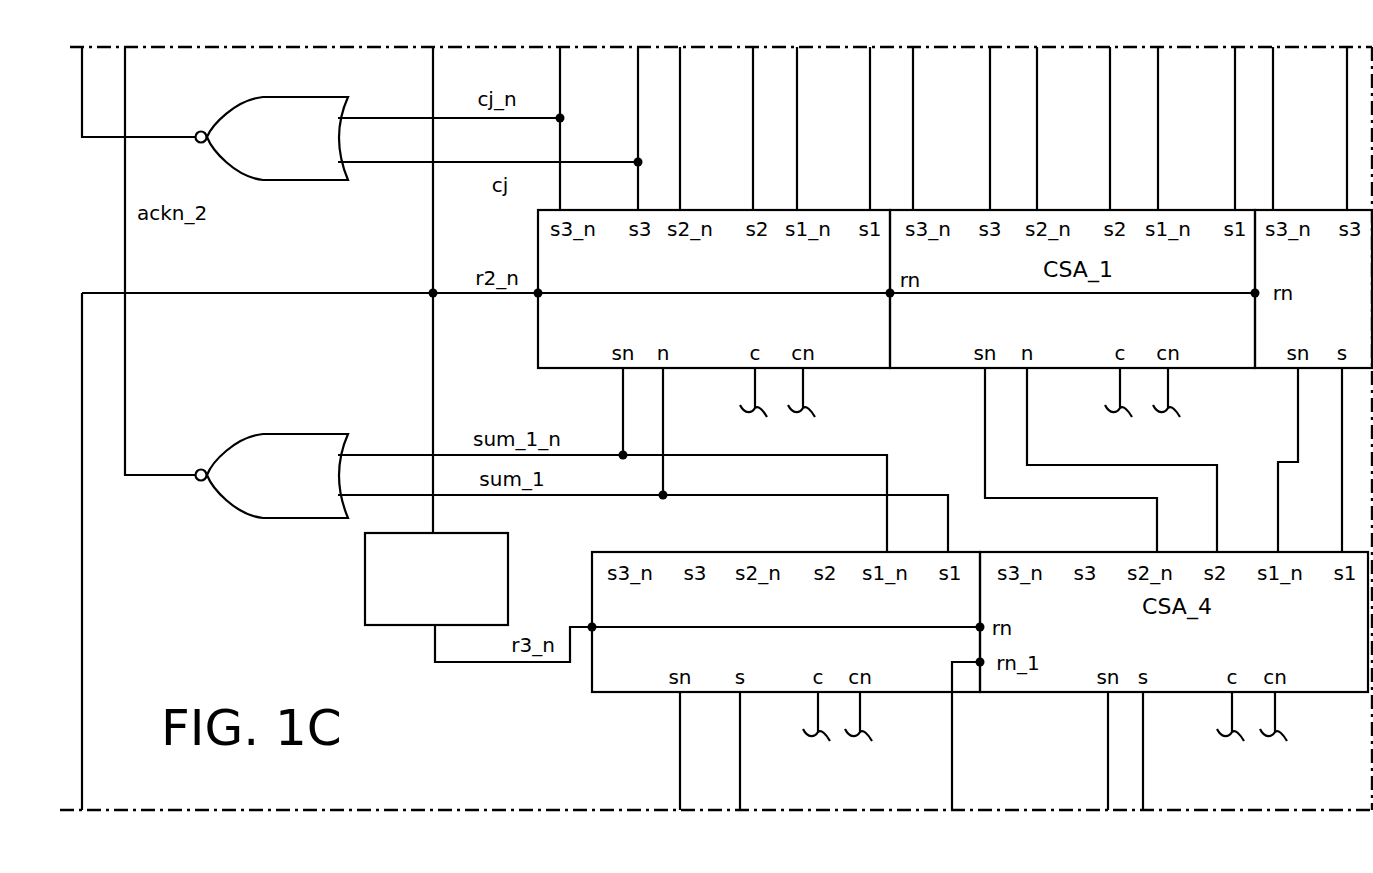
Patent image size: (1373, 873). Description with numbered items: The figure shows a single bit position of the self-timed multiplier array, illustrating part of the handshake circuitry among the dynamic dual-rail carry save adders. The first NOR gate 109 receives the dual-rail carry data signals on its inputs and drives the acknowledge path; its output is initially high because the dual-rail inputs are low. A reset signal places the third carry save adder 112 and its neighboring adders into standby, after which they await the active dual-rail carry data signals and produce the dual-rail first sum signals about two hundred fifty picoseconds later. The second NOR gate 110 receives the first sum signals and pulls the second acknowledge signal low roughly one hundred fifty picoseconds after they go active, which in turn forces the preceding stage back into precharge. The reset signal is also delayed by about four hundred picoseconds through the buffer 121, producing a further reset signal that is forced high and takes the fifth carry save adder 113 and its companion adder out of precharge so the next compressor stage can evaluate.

The NOR gate NOR_1 109 is at (297, 182).
The NOR gate NOR_2 110 is at (270, 520).
The carry save adder CSA_3 112 is at (538, 320).
The carry save adder CSA_5 113 is at (610, 550).
The buffer B_2 121 is at (362, 595).